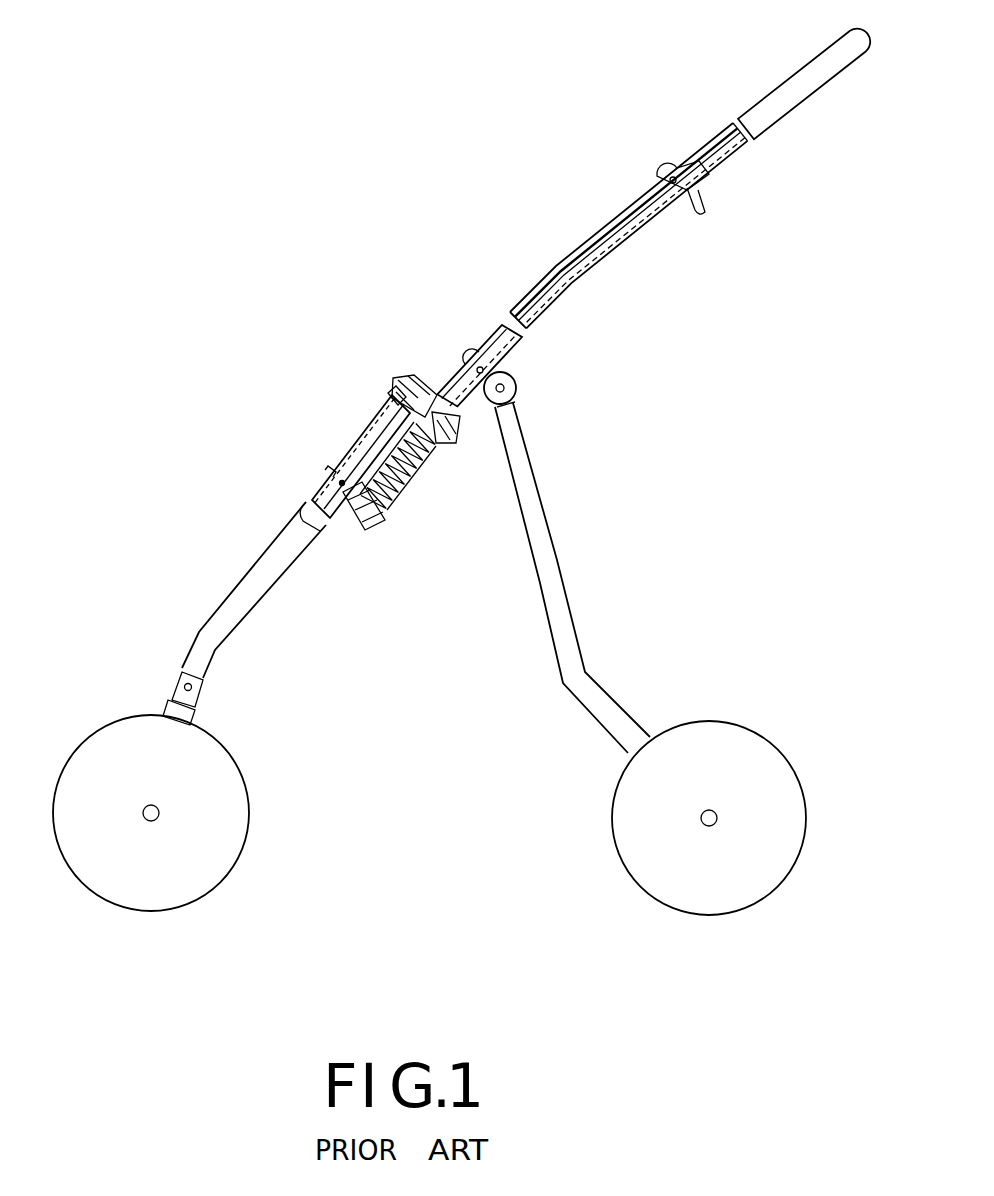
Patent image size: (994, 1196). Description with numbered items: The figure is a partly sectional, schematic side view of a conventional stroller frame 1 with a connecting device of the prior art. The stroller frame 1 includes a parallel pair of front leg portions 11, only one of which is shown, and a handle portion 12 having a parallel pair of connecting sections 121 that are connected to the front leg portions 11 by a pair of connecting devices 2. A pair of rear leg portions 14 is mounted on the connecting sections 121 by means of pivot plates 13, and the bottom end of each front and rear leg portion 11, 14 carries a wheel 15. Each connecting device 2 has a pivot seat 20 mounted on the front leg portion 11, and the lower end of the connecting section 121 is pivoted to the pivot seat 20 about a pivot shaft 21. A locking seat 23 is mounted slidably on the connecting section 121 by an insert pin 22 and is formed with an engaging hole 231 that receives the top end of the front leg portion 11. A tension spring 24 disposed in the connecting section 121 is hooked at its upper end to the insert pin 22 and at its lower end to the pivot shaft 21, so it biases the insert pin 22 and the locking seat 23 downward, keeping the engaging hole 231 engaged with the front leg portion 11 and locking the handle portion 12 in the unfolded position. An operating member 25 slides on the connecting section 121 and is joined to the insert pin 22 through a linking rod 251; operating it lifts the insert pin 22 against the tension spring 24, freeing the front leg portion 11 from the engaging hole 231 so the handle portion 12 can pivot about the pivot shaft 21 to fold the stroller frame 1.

The stroller frame 1 is at (547, 503).
The front leg portion 11 is at (255, 586).
The handle portion 12 is at (783, 121).
The connecting section 121 is at (625, 233).
The pivot plate 13 is at (508, 375).
The rear leg portion 14 is at (565, 615).
The wheel 15 is at (225, 825).
The connecting device 2 is at (460, 445).
The pivot seat 20 is at (330, 473).
The pivot shaft 21 is at (358, 517).
The insert pin 22 is at (437, 425).
The locking seat 23 is at (423, 383).
The engaging hole 231 is at (397, 397).
The tension spring 24 is at (390, 488).
The operating member 25 is at (706, 198).
The linking rod 251 is at (573, 264).